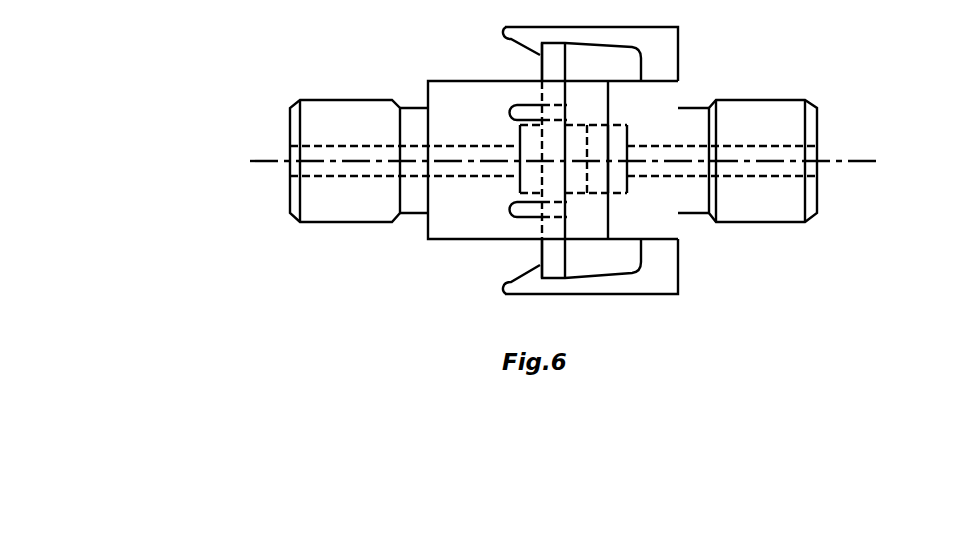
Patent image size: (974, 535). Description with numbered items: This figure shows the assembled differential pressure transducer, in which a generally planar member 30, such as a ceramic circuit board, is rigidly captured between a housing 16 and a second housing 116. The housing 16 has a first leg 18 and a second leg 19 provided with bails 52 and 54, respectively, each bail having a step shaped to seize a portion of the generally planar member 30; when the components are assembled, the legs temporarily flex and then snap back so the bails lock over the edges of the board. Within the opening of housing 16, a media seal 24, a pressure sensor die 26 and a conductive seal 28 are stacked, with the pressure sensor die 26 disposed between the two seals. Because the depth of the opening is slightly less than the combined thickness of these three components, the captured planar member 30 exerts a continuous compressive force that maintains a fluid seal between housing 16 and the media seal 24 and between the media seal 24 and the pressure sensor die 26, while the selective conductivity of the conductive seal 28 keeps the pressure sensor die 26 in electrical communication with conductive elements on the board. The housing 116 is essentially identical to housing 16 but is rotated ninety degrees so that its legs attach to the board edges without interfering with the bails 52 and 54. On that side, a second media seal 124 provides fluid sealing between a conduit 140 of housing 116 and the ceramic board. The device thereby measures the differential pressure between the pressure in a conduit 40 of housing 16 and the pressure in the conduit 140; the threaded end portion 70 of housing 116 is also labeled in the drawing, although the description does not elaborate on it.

The housing 16 is at (665, 220).
The first leg 18 is at (592, 38).
The second leg 19 is at (615, 285).
The media seal 24 is at (617, 140).
The pressure sensor die 26 is at (598, 137).
The conductive seal 28 is at (577, 133).
The generally planar member 30 is at (555, 63).
The conduit 40 is at (793, 161).
The bail 52 is at (517, 41).
The bail 54 is at (527, 283).
The right threaded shaft 70 is at (733, 118).
The housing 116 is at (442, 225).
The second media seal 124 is at (527, 183).
The conduit 140 is at (310, 170).